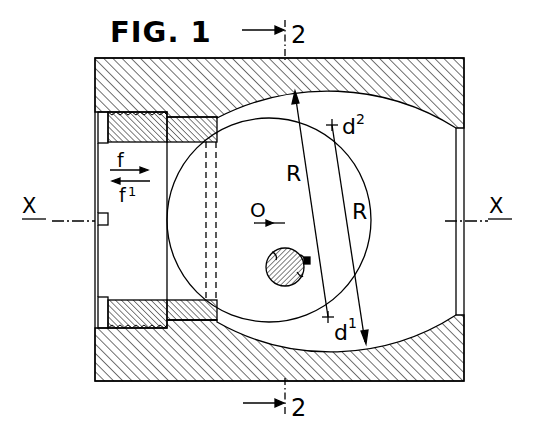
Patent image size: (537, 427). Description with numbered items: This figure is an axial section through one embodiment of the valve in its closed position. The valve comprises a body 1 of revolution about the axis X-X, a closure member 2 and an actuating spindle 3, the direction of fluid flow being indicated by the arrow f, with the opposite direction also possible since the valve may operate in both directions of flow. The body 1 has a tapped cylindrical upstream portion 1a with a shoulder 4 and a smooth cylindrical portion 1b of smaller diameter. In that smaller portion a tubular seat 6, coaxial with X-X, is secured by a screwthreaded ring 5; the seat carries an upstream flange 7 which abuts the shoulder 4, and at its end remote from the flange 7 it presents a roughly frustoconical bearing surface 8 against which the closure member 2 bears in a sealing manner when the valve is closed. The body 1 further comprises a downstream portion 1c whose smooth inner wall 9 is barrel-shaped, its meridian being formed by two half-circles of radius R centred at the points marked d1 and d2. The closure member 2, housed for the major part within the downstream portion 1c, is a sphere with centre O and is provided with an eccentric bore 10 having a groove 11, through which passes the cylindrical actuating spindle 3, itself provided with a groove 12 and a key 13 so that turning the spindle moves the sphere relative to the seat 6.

The body 1 is at (375, 59).
The tapped cylindrical upstream portion 1a is at (106, 81).
The cylindrical portion 1b is at (207, 322).
The downstream portion 1c is at (399, 362).
The closure member 2 is at (362, 193).
The actuating spindle 3 is at (267, 271).
The shoulder 4 is at (172, 113).
The screwthreaded ring 5 is at (125, 312).
The tubular seat 6 is at (167, 302).
The upstream flange 7 is at (173, 323).
The frustoconical bearing surface 8 is at (215, 141).
The barrel-shaped inner wall 9 is at (290, 346).
The eccentric bore 10 is at (273, 254).
The groove 11 is at (303, 254).
The groove 12 is at (311, 262).
The key 13 is at (303, 276).